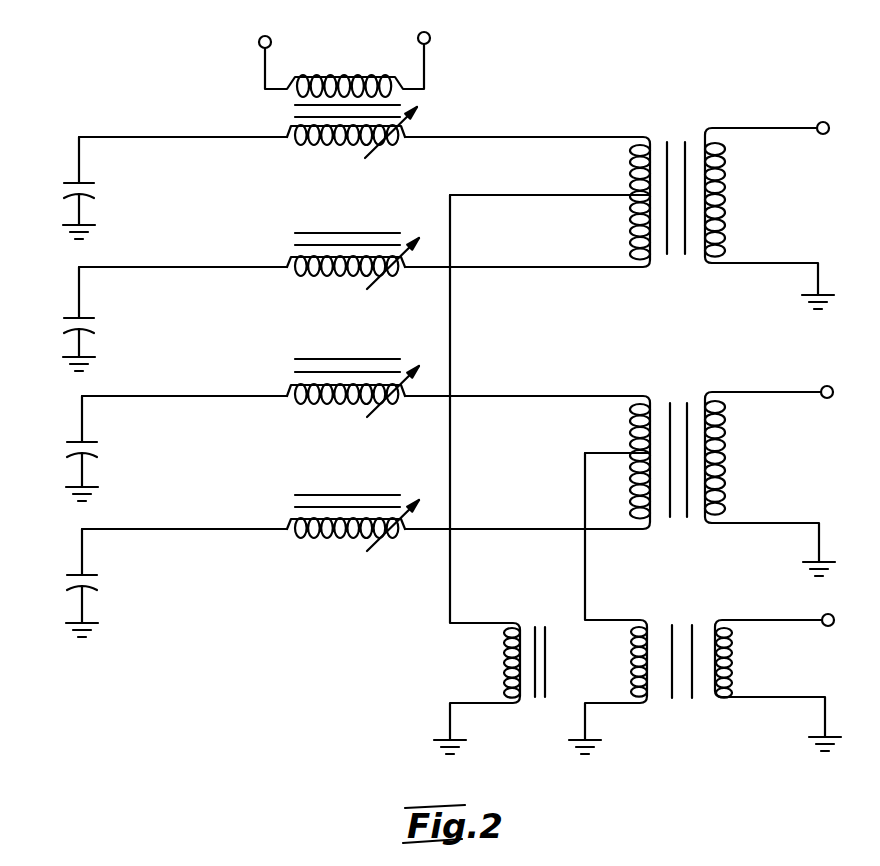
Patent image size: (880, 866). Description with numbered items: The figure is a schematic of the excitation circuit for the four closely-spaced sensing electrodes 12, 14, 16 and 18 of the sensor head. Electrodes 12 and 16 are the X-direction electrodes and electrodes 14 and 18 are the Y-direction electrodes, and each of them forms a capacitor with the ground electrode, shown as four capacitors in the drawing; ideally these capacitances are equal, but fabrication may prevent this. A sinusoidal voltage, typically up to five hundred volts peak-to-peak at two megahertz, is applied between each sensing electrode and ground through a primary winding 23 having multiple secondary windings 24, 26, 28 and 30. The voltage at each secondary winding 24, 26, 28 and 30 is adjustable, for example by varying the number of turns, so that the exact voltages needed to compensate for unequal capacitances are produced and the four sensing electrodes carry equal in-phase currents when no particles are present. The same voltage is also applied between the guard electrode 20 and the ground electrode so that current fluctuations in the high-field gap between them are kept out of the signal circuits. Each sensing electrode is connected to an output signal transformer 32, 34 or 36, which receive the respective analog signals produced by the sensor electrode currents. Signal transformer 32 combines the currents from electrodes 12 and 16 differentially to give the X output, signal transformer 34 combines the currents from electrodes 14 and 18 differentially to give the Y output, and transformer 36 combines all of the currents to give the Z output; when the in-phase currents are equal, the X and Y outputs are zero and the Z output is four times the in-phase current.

The sensing electrode 12 is at (78, 158).
The sensing electrode 14 is at (81, 427).
The sensing electrode 16 is at (78, 300).
The sensing electrode 18 is at (81, 562).
The guard electrode 20 is at (70, 225).
The primary winding 23 is at (377, 83).
The secondary winding 24 is at (288, 128).
The secondary winding 26 is at (288, 258).
The secondary winding 28 is at (288, 386).
The secondary winding 30 is at (288, 520).
The output signal transformer 32 is at (691, 142).
The output signal transformer 34 is at (696, 402).
The output signal transformer 36 is at (703, 640).